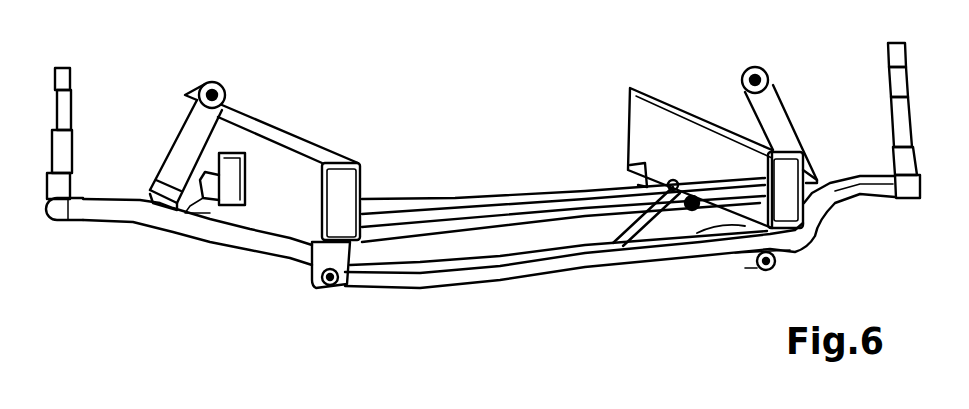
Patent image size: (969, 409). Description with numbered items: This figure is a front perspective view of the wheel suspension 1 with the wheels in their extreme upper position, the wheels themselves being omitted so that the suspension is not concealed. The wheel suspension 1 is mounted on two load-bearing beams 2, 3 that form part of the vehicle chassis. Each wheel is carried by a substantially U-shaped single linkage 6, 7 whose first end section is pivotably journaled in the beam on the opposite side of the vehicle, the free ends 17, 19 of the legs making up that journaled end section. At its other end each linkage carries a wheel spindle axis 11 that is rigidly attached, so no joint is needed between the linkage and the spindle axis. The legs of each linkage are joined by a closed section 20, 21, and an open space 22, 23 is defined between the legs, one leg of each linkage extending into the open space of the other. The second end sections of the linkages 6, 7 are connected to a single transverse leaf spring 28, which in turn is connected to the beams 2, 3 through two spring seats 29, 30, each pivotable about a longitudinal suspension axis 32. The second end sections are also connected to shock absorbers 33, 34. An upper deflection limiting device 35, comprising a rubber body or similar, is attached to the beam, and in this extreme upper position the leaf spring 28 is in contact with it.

The wheel suspension 1 is at (343, 55).
The load-bearing beam 2 is at (272, 131).
The load-bearing beam 3 is at (707, 117).
The linkage 6 is at (141, 218).
The linkage 7 is at (708, 252).
The wheel spindle axis 11 is at (63, 108).
The free end 17 is at (755, 276).
The free end 19 is at (343, 290).
The closed section 20 is at (872, 210).
The closed section 21 is at (184, 242).
The open space 22 is at (475, 245).
The open space 23 is at (538, 245).
The leaf spring 28 is at (497, 290).
The spring seat 29 is at (662, 233).
The spring seat 30 is at (247, 223).
The suspension axis 32 is at (620, 150).
The shock absorber 33 is at (772, 100).
The shock absorber 34 is at (183, 138).
The upper deflection limiting device 35 is at (162, 173).